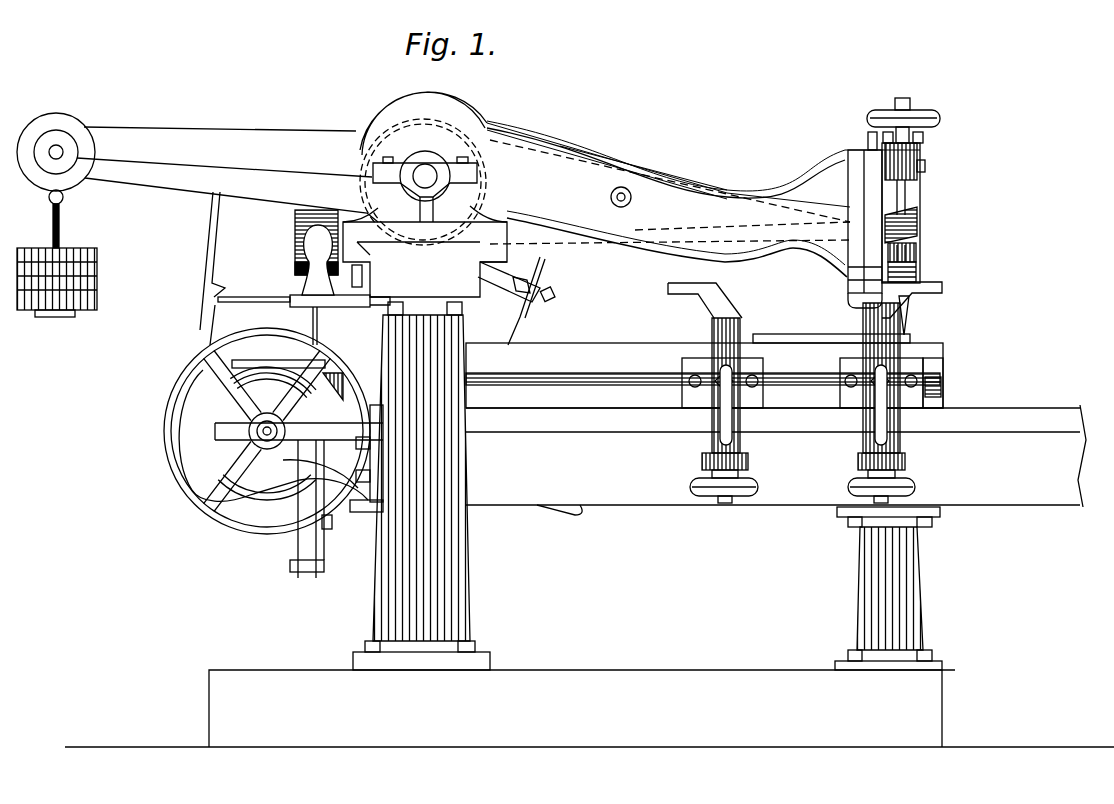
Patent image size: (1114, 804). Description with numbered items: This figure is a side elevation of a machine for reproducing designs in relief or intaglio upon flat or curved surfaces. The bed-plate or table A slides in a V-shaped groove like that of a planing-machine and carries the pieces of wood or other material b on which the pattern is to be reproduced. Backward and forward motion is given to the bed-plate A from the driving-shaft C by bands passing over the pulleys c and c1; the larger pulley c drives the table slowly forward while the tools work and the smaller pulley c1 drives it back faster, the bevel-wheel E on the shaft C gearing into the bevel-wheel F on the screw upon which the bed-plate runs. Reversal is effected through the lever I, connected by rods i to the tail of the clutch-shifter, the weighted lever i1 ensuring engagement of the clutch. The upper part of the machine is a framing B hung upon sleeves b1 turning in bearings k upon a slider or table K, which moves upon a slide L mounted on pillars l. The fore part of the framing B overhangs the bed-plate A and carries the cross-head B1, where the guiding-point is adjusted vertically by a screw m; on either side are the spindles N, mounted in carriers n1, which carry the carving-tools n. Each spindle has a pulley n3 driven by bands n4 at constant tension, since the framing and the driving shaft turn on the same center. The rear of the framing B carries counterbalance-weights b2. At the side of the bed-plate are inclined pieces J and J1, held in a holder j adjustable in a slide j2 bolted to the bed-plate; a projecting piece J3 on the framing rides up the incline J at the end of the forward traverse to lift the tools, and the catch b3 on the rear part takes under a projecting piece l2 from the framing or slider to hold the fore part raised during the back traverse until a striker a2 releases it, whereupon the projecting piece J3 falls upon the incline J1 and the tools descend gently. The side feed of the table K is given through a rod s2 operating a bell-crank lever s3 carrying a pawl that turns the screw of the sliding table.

The bed-plate or table A is at (560, 355).
The pieces of wood or other material b is at (704, 363).
The sleeves or center-pieces b1 is at (432, 168).
The counterbalance-weights b2 is at (57, 253).
The catch b3 is at (216, 287).
The framing B is at (468, 195).
The cross-head B1 is at (884, 212).
The driving-shaft C is at (267, 431).
The pulley c is at (262, 515).
The pulley c1 is at (267, 433).
The bevel-wheel E is at (204, 432).
The bevel-wheel F is at (299, 406).
The lever I is at (312, 536).
The rods i is at (308, 580).
The weighted lever i1 is at (318, 322).
The holder j is at (708, 380).
The slide j2 is at (610, 392).
The inclined piece J is at (696, 288).
The inclined piece J1 is at (915, 300).
The projecting piece J3 is at (865, 302).
The bearings k is at (442, 209).
The slider or table K is at (425, 259).
The slide L is at (432, 262).
The pillars l is at (410, 471).
The plate l2 is at (246, 300).
The screw m is at (850, 108).
The spindles N is at (917, 205).
The carving-tools n is at (910, 322).
The carriers n1 is at (423, 182).
The pulley n3 is at (410, 97).
The bands n4 is at (540, 246).
The rod s2 is at (531, 301).
The bell-crank lever s3 is at (502, 296).
The bar a2 is at (256, 366).